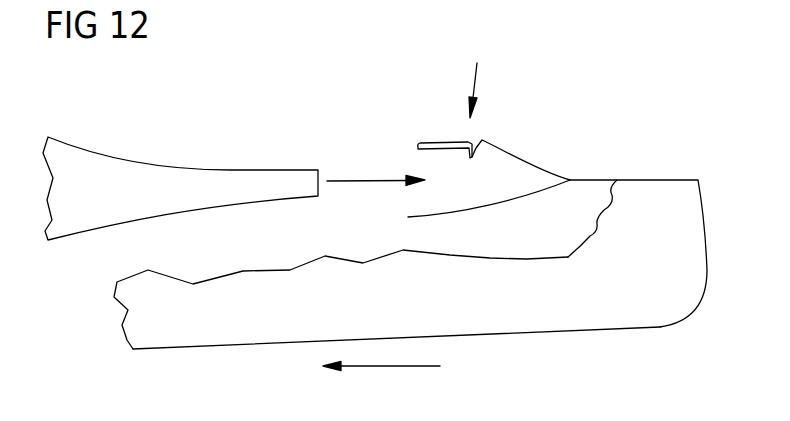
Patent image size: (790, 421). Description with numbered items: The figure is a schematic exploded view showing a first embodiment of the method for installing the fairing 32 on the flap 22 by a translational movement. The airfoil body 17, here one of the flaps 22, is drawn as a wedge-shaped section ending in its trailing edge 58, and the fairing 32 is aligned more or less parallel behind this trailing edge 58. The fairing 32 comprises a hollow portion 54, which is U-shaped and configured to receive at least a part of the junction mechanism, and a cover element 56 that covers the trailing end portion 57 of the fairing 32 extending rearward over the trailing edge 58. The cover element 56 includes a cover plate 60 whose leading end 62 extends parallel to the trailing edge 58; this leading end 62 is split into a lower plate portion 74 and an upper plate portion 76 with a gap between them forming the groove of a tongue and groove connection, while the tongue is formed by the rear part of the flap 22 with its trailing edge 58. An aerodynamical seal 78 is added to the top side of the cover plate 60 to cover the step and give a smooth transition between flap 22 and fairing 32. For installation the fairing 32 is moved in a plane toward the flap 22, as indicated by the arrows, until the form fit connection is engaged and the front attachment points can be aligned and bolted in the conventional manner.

The airfoil body 17 is at (180, 167).
The flap 22 is at (95, 163).
The trailing edge 58 is at (328, 165).
The leading end 62 is at (475, 76).
The aerodynamical seal 78 is at (432, 143).
The upper plate portion 76 is at (500, 151).
The cover plate 60 is at (600, 178).
The cover element 56 is at (639, 178).
The lower plate portion 74 is at (462, 217).
The trailing end portion 57 is at (648, 319).
The fairing 32 is at (472, 328).
The hollow portion 54 is at (160, 343).